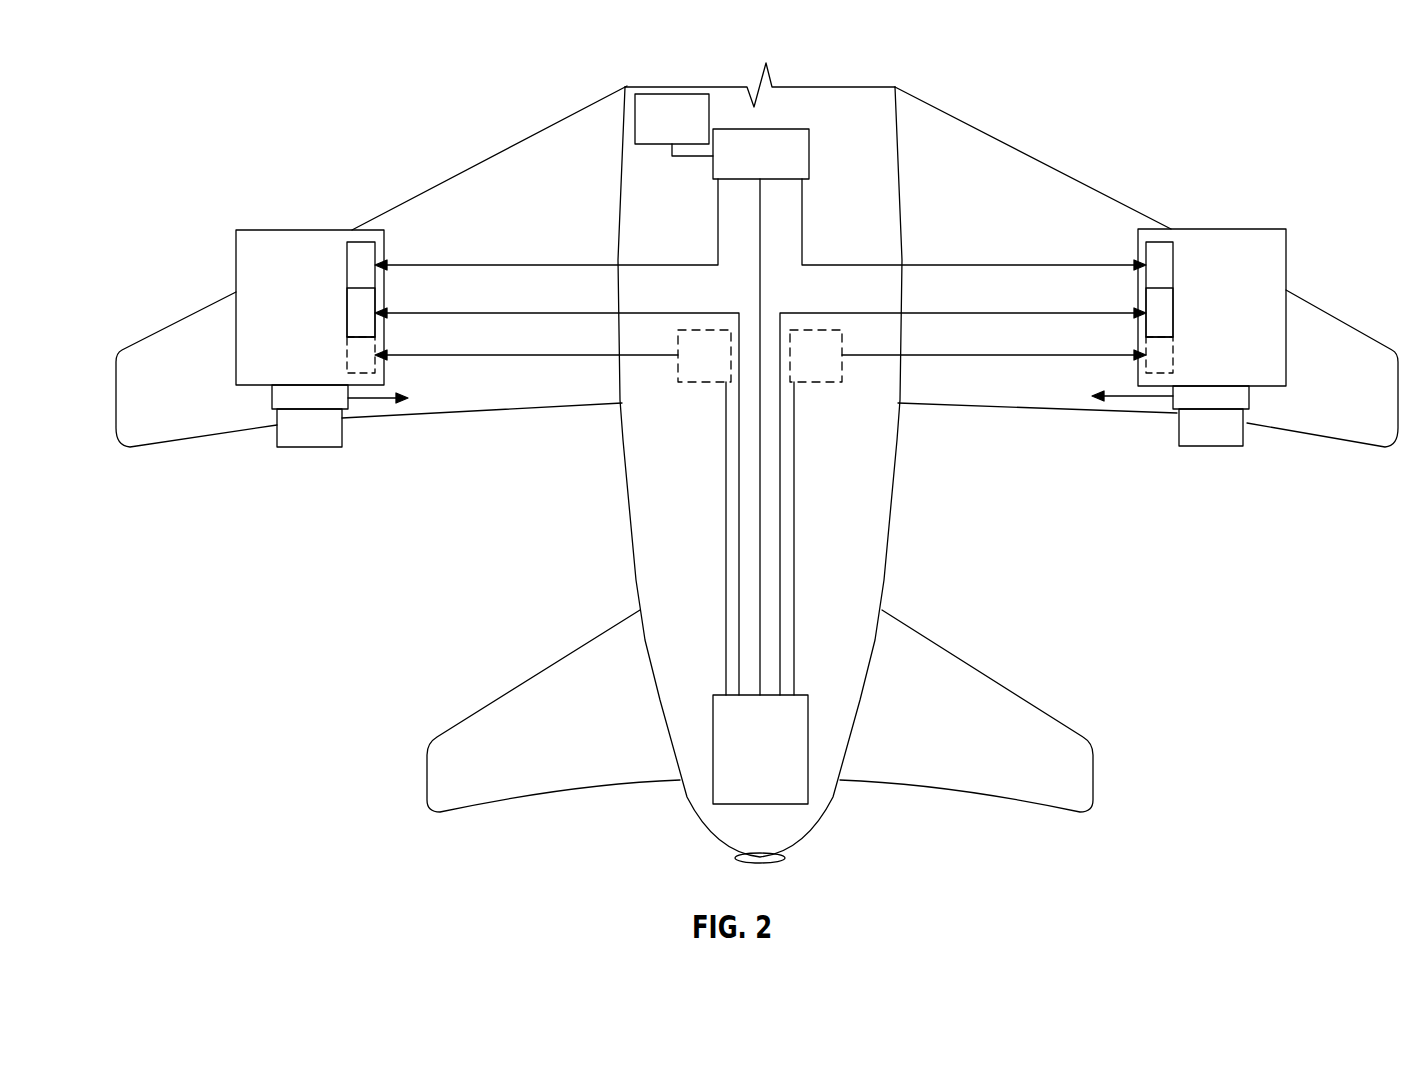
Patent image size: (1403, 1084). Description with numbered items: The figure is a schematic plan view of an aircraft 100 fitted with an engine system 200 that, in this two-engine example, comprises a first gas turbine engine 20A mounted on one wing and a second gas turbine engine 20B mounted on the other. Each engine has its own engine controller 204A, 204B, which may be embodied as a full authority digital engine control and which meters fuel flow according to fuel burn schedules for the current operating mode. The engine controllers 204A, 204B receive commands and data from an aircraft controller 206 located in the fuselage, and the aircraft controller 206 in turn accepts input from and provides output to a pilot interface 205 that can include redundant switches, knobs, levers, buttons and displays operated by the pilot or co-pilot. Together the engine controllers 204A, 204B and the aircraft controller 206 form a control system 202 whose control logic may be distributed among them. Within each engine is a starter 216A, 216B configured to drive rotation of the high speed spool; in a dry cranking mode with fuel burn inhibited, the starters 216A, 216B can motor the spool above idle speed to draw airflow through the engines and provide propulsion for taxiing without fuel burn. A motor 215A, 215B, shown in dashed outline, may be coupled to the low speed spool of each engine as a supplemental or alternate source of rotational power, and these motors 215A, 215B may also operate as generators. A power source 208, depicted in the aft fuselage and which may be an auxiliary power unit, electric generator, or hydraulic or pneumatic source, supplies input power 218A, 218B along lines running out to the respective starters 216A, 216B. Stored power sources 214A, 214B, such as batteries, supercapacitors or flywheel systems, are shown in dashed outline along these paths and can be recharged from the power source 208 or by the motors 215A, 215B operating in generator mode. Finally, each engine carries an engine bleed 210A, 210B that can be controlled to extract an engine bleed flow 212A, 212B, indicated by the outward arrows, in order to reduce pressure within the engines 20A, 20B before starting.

The aircraft 100 is at (576, 88).
The engine system 200 is at (178, 103).
The control system 202 is at (973, 148).
The pilot interface 205 is at (694, 132).
The aircraft controller 206 is at (786, 169).
The power source 208 is at (713, 723).
The input power 218A is at (457, 312).
The input power 218B is at (987, 312).
The stored power source 214A is at (693, 382).
The stored power source 214B is at (825, 382).
The first gas turbine engine 20A is at (236, 257).
The second gas turbine engine 20B is at (1286, 250).
The engine controller 204A is at (357, 247).
The engine controller 204B is at (1162, 250).
The starter 216A is at (348, 309).
The starter 216B is at (1173, 313).
The motor 215A is at (348, 353).
The motor 215B is at (1173, 352).
The engine bleed 210A is at (272, 400).
The engine bleed 210B is at (1249, 393).
The engine bleed flow 212A is at (373, 400).
The engine bleed flow 212B is at (1132, 400).